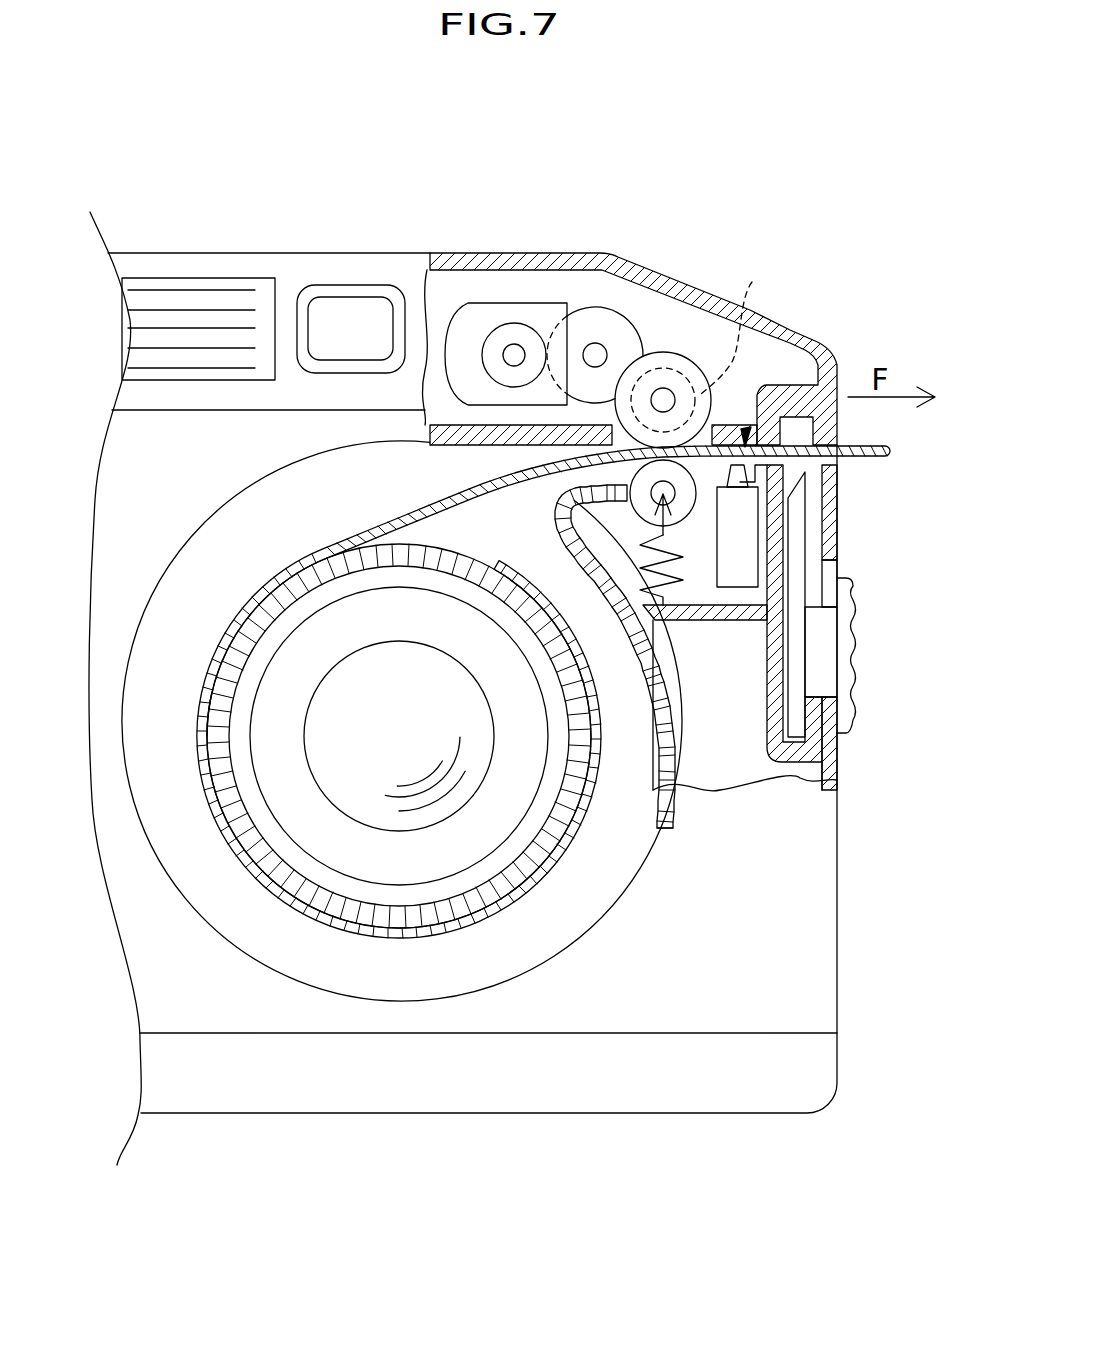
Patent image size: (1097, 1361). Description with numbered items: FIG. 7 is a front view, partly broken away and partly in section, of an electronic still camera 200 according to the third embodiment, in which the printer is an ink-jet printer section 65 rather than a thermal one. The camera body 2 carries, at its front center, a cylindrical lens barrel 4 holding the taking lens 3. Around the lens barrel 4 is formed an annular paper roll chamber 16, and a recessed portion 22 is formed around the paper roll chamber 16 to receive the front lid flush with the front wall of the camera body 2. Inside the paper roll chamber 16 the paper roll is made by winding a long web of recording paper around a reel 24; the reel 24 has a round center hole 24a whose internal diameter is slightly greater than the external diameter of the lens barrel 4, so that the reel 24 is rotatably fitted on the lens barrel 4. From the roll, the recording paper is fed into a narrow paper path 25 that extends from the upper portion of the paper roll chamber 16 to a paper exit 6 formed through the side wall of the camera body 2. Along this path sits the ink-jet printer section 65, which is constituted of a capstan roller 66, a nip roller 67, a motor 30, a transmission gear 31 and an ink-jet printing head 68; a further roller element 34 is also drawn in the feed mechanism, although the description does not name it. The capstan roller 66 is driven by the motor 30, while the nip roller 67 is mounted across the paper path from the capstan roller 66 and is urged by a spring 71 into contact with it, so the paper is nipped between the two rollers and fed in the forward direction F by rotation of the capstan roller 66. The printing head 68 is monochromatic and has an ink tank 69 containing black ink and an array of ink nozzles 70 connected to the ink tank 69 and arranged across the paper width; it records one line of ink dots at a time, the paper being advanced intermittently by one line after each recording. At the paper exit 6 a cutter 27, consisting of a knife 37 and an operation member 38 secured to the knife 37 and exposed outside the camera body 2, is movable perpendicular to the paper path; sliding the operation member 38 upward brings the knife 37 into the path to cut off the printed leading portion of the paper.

The electronic still camera 200 is at (187, 220).
The camera body 2 is at (728, 1080).
The taking lens 3 is at (405, 760).
The lens barrel 4 is at (327, 833).
The paper exit 6 is at (845, 438).
The paper roll chamber 16 is at (558, 925).
The recessed portion 22 is at (573, 1010).
The reel 24 is at (580, 818).
The round center hole 24a is at (216, 738).
The paper path 25 is at (520, 452).
The cutter 27 is at (850, 845).
The motor 30 is at (510, 315).
The transmission gear 31 is at (630, 340).
The transport roller 34 is at (700, 372).
The knife 37 is at (802, 494).
The operation member 38 is at (848, 660).
The ink-jet printer section 65 is at (882, 273).
The capstan roller 66 is at (680, 357).
The nip roller 67 is at (748, 428).
The ink-jet printing head 68 is at (825, 380).
The ink tank 69 is at (738, 568).
The ink nozzles 70 is at (737, 470).
The spring 71 is at (643, 577).